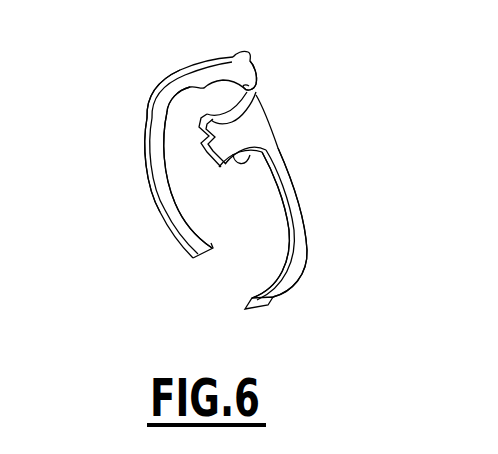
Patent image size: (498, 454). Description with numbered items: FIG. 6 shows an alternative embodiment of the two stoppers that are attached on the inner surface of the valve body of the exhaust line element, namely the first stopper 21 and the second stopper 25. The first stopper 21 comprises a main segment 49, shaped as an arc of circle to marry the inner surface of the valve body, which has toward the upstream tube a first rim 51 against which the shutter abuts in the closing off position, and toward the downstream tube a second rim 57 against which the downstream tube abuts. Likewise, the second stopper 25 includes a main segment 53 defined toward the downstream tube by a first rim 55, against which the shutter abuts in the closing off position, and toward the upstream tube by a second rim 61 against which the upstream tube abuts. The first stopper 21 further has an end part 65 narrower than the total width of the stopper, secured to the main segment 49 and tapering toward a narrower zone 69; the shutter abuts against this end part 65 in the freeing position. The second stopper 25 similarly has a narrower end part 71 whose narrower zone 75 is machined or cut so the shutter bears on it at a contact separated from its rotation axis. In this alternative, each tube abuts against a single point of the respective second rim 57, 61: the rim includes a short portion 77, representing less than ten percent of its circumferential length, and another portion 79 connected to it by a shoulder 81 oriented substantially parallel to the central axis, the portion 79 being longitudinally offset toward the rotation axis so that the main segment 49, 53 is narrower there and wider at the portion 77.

The first stopper 21 is at (318, 281).
The second stopper 25 is at (100, 95).
The main segment 49 is at (284, 194).
The first rim 51 is at (311, 254).
The main segment 53 is at (160, 207).
The first rim 55 is at (150, 124).
The second rim 57 is at (278, 231).
The second rim 61 is at (178, 177).
The end part 65 is at (250, 114).
The narrower zone 69 is at (172, 101).
The narrower end part 71 is at (200, 72).
The narrower zone 75 is at (264, 88).
The portion 77 is at (240, 49).
The portion 79 is at (300, 208).
The shoulder 81 is at (263, 157).